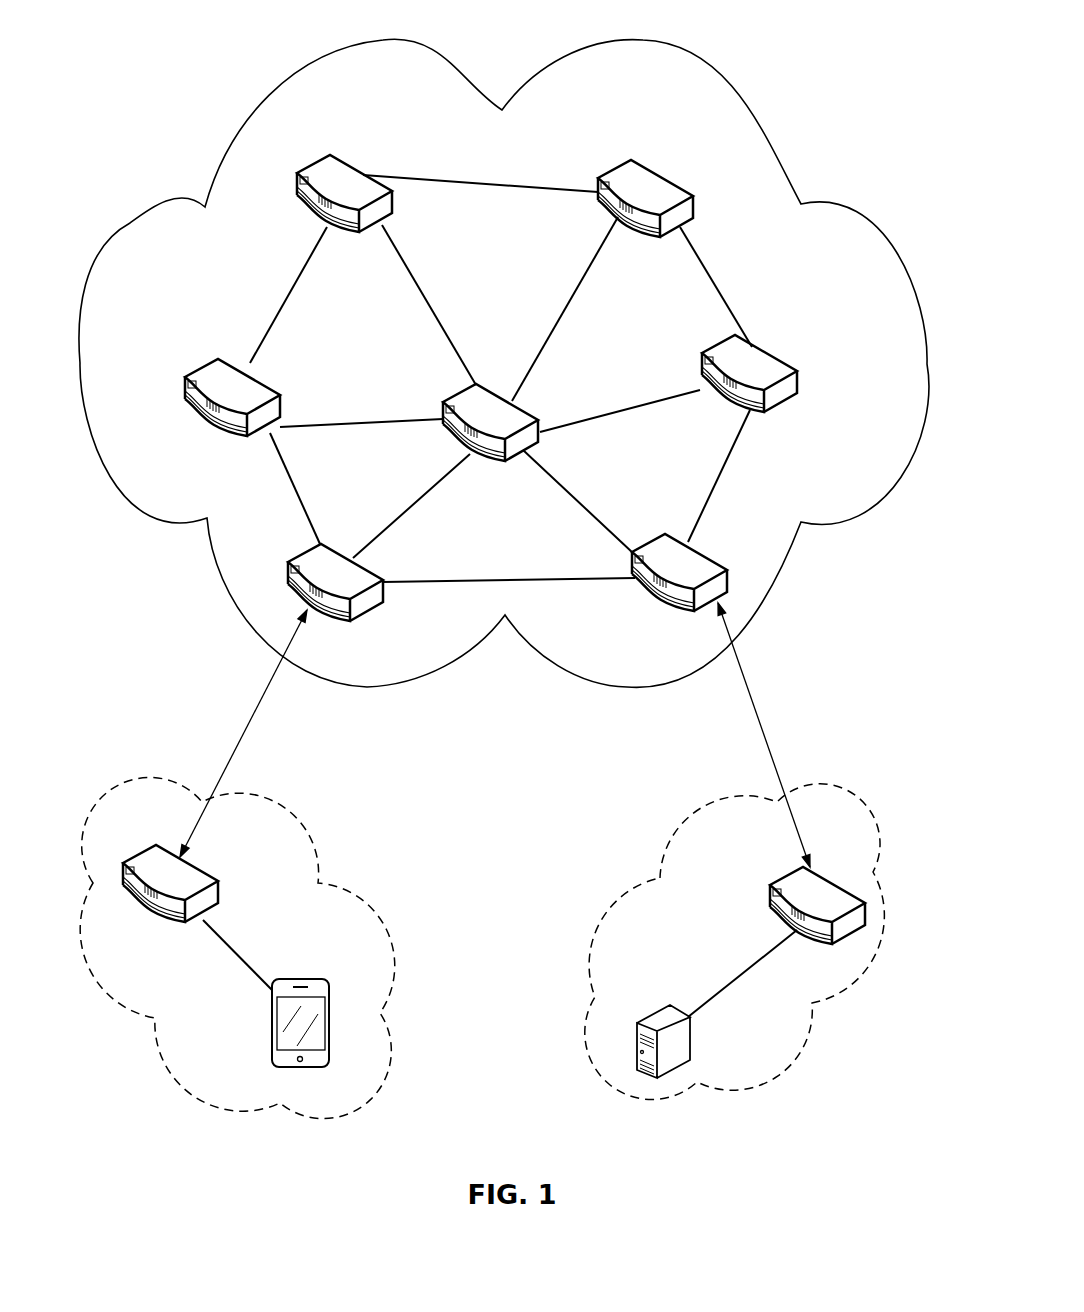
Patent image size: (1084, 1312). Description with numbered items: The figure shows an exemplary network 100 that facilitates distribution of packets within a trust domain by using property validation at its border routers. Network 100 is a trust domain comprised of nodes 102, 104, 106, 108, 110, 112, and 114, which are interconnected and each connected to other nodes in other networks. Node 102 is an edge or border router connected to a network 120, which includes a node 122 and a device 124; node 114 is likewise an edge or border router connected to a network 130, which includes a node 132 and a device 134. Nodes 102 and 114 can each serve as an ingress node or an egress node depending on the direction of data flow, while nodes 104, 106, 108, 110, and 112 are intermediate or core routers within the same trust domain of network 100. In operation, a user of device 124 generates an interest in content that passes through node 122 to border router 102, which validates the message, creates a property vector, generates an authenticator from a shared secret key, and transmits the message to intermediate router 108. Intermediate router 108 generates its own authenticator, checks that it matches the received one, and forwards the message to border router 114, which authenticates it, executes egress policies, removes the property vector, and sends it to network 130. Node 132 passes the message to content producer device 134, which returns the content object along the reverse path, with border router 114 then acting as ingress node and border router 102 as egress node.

The network 100 is at (738, 82).
The node 102 is at (360, 621).
The node 104 is at (197, 365).
The node 106 is at (336, 158).
The node 108 is at (530, 415).
The node 110 is at (655, 173).
The node 112 is at (792, 367).
The node 114 is at (662, 602).
The network 120 is at (360, 888).
The node 122 is at (202, 869).
The device 124 is at (284, 978).
The network 130 is at (628, 880).
The node 132 is at (777, 881).
The device 134 is at (658, 1009).